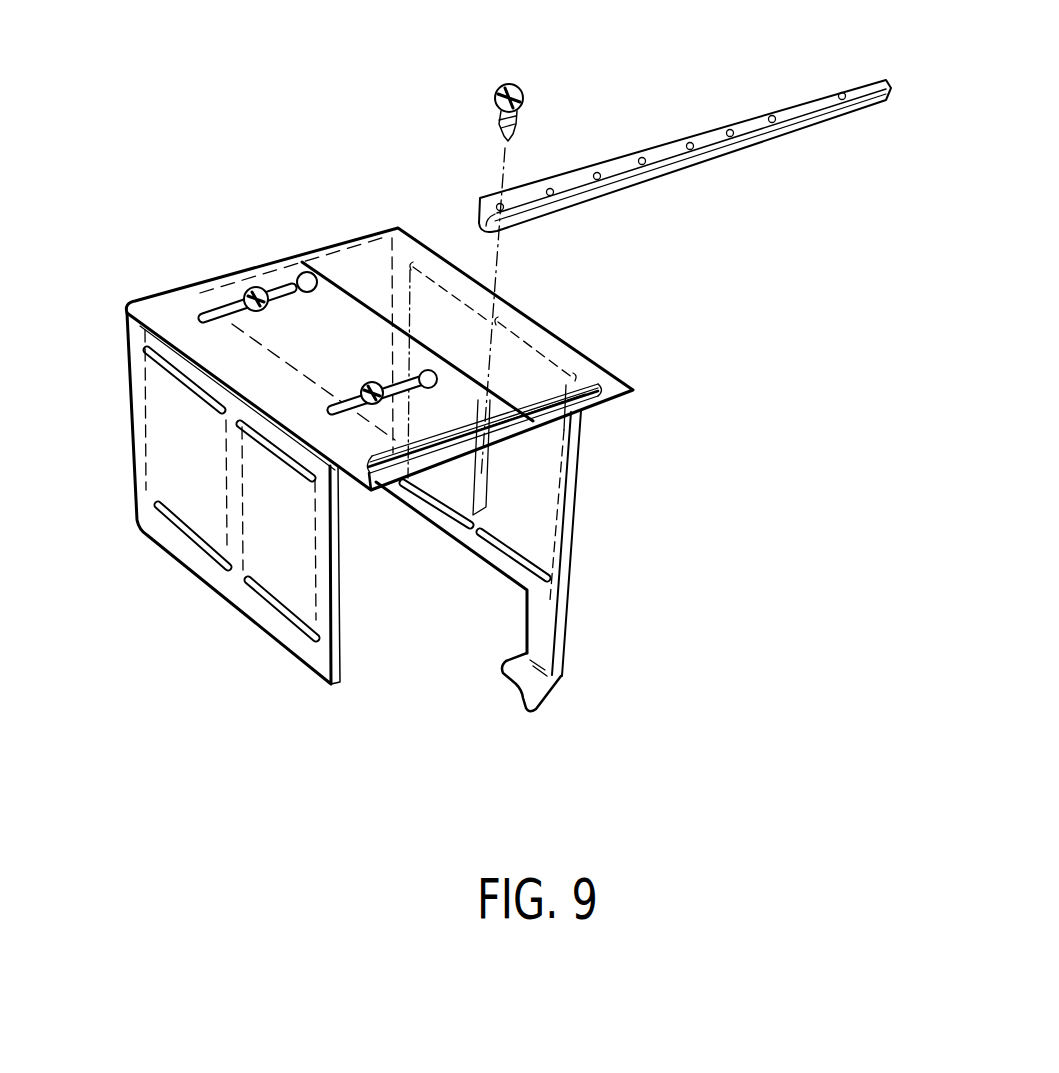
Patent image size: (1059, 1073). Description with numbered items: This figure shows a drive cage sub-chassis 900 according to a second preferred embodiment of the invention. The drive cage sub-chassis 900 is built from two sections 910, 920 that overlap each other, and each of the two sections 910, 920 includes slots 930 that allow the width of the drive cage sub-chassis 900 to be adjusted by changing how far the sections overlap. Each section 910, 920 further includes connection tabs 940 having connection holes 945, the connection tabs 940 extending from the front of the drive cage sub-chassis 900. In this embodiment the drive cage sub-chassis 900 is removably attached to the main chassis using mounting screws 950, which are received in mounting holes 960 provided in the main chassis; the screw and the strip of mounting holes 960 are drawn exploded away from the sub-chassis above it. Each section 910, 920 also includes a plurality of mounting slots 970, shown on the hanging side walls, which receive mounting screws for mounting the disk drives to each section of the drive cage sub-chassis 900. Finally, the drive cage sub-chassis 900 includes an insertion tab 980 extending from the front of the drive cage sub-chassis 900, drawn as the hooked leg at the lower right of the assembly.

The drive cage sub-chassis 900 is at (240, 235).
The section 910 is at (127, 314).
The section 920 is at (570, 348).
The slots 930 is at (318, 276).
The connection tabs 940 is at (633, 390).
The connection holes 945 is at (378, 492).
The mounting screws 950 is at (524, 96).
The mounting holes 960 is at (803, 100).
The mounting slots 970 is at (157, 503).
The insertion tab 980 is at (545, 692).